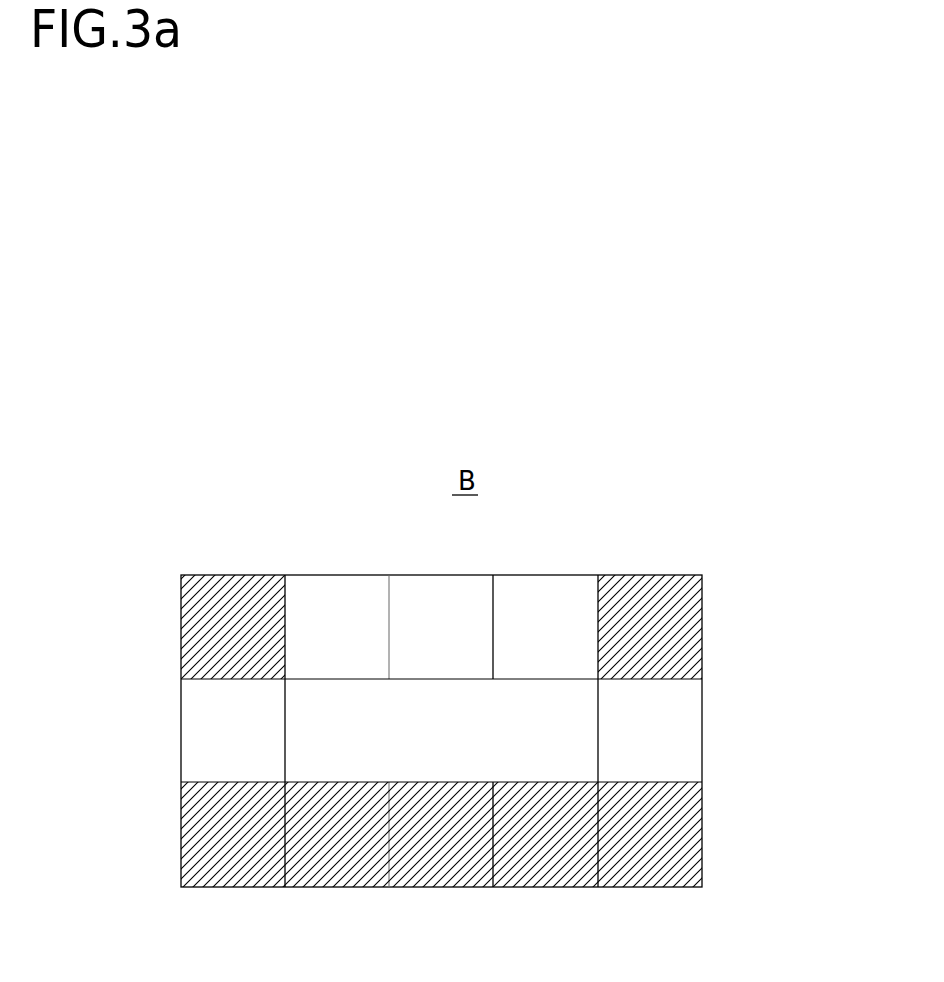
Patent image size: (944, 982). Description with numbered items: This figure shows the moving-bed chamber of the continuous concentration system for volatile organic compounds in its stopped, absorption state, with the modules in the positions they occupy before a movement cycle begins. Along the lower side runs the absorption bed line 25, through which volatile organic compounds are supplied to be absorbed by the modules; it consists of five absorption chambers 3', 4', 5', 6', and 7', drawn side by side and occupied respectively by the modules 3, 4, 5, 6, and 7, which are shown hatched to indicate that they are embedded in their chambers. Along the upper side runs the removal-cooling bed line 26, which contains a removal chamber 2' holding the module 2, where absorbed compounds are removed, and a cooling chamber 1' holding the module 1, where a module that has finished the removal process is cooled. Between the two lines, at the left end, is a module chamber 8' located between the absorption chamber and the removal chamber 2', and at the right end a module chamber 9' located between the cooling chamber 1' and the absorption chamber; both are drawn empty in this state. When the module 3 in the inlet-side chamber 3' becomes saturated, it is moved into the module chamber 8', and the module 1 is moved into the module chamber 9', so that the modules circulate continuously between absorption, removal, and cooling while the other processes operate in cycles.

The module 1 is at (650, 627).
The module 2 is at (233, 627).
The module 3 is at (233, 834).
The module 4 is at (337, 834).
The module 5 is at (441, 834).
The module 6 is at (545, 834).
The module 7 is at (650, 834).
The cooling chamber 1' is at (650, 598).
The removal chamber 2' is at (233, 599).
The absorption chamber 3' is at (233, 871).
The absorption chamber 4' is at (337, 870).
The absorption chamber 5' is at (441, 870).
The absorption chamber 6' is at (545, 871).
The absorption chamber 7' is at (650, 870).
The module chamber 8' is at (206, 730).
The module chamber 9' is at (681, 730).
The absorption bed line 25 is at (752, 846).
The removal-cooling bed line 26 is at (752, 619).